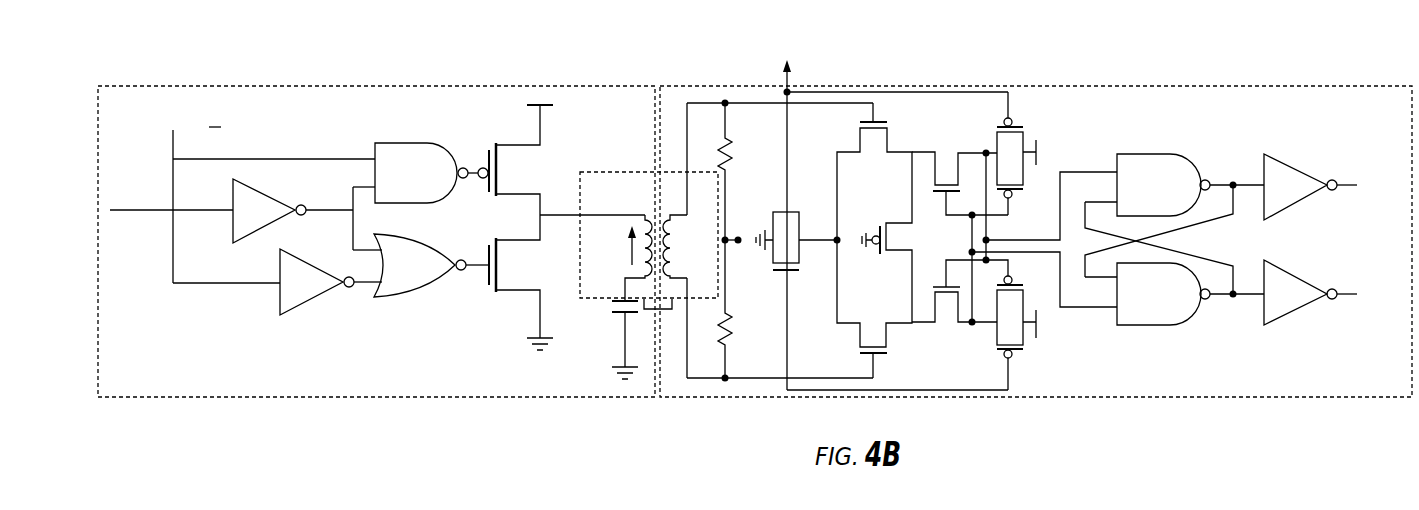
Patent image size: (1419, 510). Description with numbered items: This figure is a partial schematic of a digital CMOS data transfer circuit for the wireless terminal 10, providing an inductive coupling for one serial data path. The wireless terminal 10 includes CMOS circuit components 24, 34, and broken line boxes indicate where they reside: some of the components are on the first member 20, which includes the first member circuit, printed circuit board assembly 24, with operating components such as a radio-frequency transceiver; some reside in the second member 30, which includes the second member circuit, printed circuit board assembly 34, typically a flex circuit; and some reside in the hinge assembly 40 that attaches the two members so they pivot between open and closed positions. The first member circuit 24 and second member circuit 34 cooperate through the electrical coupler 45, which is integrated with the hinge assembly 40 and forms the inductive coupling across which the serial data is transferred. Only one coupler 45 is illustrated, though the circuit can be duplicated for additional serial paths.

The wireless terminal 10 is at (519, 48).
The second member 30 is at (264, 78).
The printed circuit board assembly 34 is at (333, 316).
The hinge assembly 40 is at (618, 172).
The electrical coupler 45 is at (659, 286).
The first member 20 is at (1195, 346).
The printed circuit board assembly 24 is at (1157, 340).